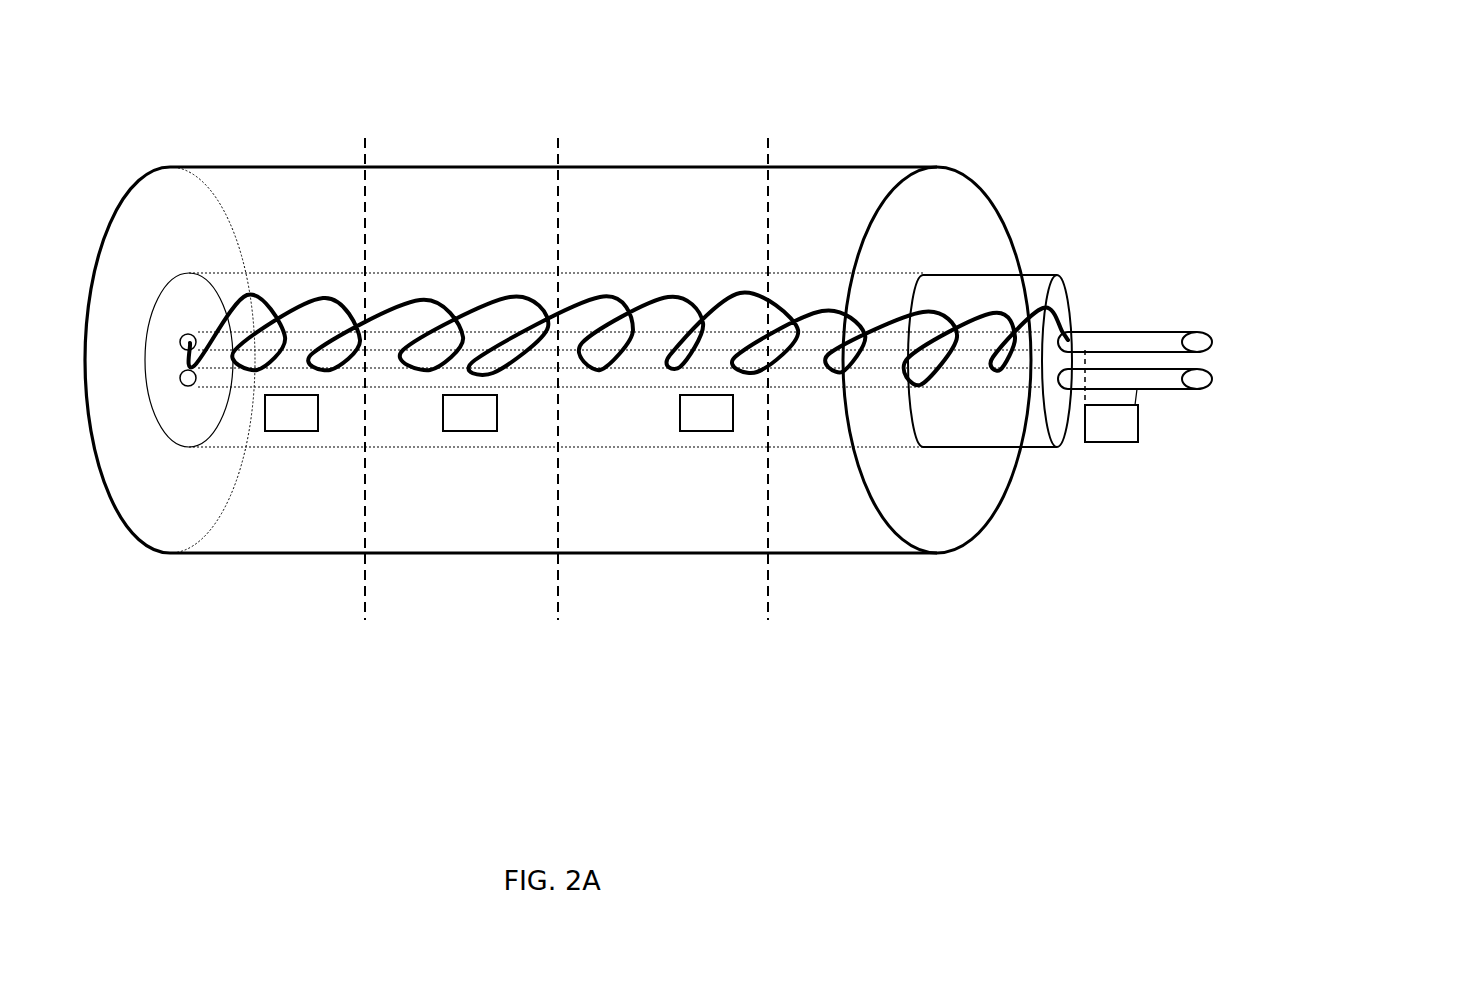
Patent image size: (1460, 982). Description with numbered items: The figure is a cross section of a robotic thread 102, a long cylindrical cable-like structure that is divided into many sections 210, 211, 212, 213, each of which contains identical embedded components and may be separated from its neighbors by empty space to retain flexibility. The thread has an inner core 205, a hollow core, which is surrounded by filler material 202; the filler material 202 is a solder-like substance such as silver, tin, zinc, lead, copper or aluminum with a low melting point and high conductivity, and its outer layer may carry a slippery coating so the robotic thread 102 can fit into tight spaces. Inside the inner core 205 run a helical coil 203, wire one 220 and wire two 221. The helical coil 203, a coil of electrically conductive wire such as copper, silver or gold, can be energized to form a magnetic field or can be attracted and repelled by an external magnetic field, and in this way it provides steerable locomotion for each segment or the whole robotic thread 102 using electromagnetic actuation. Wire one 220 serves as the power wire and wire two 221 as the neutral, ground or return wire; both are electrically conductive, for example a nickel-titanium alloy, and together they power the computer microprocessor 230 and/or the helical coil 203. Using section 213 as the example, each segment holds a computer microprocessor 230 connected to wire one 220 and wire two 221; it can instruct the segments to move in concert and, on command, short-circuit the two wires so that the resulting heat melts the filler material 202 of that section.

The robotic thread 102 is at (135, 135).
The filler material 202 is at (977, 217).
The helical coil 203 is at (1062, 308).
The inner core 205 is at (1257, 356).
The section 210 is at (348, 630).
The section 211 is at (362, 630).
The section 212 is at (752, 630).
The section 213 is at (787, 630).
The wire one 220 is at (1217, 338).
The wire two 221 is at (1163, 401).
The computer microprocessor 230 is at (701, 396).